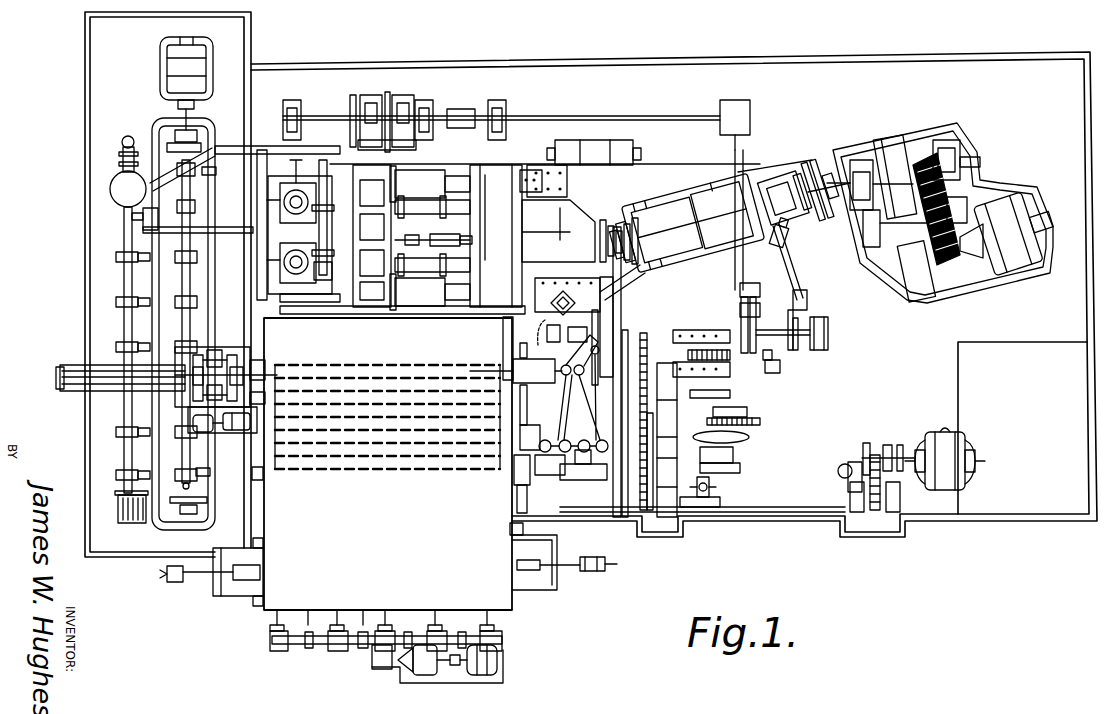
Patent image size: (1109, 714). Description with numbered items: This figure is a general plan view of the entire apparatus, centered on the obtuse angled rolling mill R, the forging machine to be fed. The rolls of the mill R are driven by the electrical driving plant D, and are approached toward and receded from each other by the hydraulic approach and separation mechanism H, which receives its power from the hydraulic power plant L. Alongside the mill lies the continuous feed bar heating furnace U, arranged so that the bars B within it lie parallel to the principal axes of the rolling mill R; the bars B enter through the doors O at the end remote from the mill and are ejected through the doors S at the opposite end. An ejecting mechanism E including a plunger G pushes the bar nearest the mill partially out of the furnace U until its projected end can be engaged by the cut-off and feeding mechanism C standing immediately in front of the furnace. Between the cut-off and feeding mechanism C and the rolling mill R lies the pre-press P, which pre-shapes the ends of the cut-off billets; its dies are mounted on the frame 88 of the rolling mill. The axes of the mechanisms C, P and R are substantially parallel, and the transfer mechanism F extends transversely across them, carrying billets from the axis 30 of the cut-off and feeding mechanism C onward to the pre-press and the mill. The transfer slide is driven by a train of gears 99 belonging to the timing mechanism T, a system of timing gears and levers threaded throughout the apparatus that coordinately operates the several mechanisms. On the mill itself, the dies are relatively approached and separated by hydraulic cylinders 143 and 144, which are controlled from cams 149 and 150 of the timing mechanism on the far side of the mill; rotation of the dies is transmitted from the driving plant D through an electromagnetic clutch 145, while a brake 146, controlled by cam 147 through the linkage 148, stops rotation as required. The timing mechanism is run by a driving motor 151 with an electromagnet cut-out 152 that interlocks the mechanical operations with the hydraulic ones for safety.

The hydraulic cylinder 143 is at (326, 190).
The hydraulic cylinder 144 is at (336, 278).
The electromagnetic clutch 145 is at (807, 165).
The brake 146 is at (775, 188).
The cam 147 is at (797, 354).
The linkage 148 is at (786, 249).
The cam 149 is at (384, 150).
The cam 150 is at (393, 150).
The driving motor 151 is at (940, 450).
The electromagnet cut-out 152 is at (866, 445).
The frame 88 is at (760, 272).
The train of gears 99 is at (716, 487).
The axis 30 is at (62, 379).
The hydraulic power plant L is at (165, 283).
The pre-press P is at (128, 262).
The timing mechanism T is at (601, 262).
The hydraulic approach and separation mechanism H is at (520, 227).
The machine M is at (437, 237).
The obtuse angled rolling mill R is at (579, 214).
The cut-off and feeding mechanism C is at (562, 372).
The transfer mechanism F is at (706, 225).
The electrical driving plant D is at (944, 206).
The doors S is at (262, 380).
The ejecting mechanism E is at (94, 368).
The plunger G is at (240, 328).
The continuous feed bar heating furnace U is at (388, 464).
The bars B is at (346, 400).
The doors O is at (253, 587).